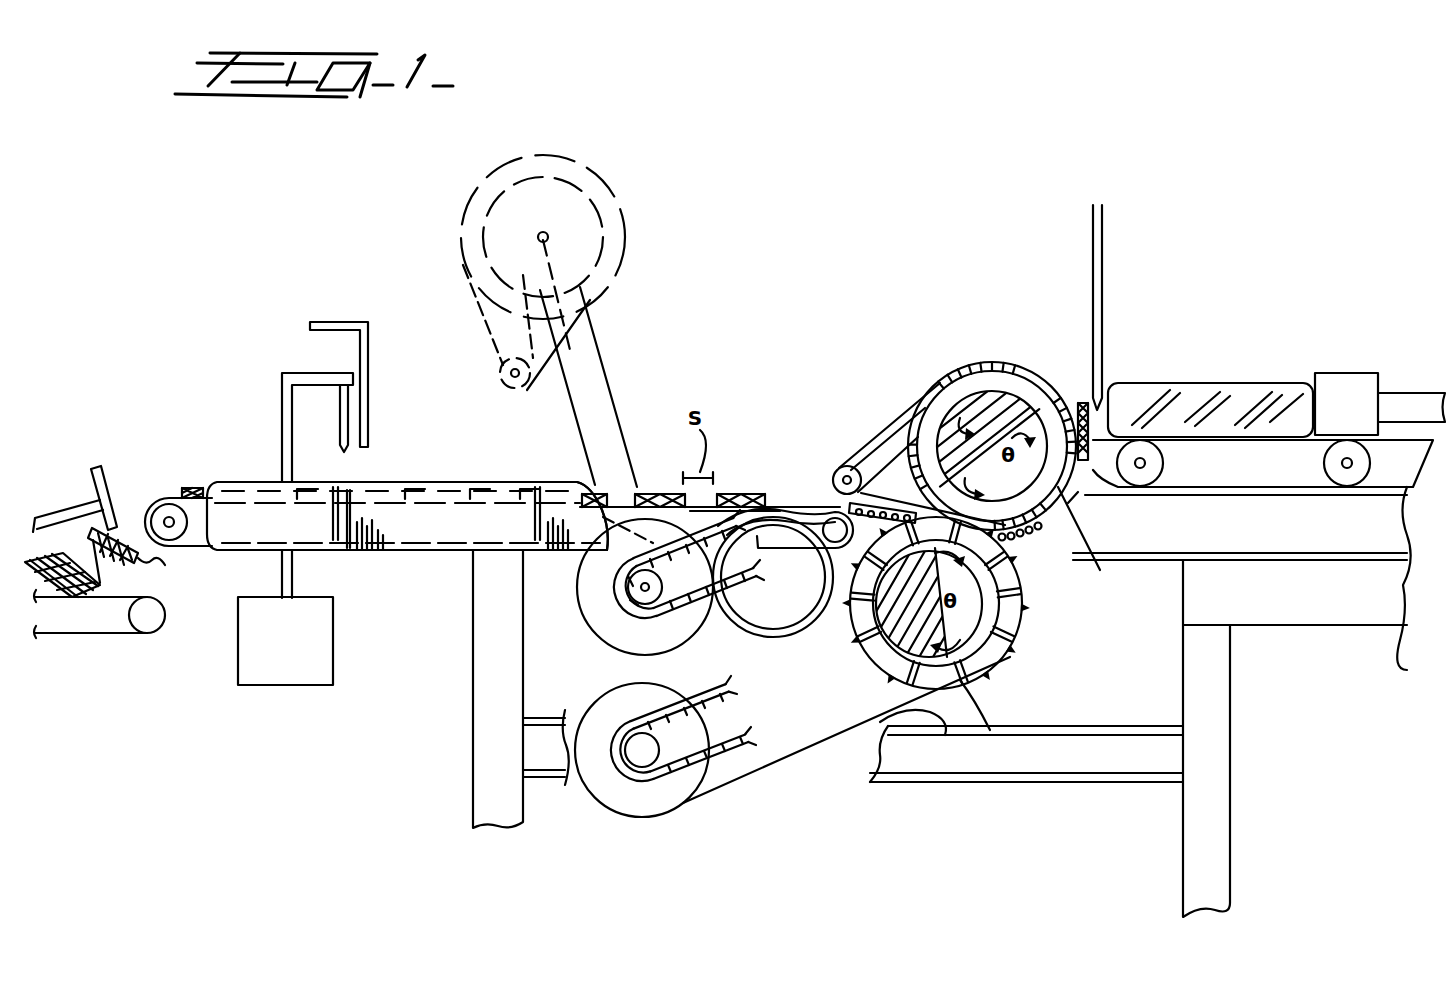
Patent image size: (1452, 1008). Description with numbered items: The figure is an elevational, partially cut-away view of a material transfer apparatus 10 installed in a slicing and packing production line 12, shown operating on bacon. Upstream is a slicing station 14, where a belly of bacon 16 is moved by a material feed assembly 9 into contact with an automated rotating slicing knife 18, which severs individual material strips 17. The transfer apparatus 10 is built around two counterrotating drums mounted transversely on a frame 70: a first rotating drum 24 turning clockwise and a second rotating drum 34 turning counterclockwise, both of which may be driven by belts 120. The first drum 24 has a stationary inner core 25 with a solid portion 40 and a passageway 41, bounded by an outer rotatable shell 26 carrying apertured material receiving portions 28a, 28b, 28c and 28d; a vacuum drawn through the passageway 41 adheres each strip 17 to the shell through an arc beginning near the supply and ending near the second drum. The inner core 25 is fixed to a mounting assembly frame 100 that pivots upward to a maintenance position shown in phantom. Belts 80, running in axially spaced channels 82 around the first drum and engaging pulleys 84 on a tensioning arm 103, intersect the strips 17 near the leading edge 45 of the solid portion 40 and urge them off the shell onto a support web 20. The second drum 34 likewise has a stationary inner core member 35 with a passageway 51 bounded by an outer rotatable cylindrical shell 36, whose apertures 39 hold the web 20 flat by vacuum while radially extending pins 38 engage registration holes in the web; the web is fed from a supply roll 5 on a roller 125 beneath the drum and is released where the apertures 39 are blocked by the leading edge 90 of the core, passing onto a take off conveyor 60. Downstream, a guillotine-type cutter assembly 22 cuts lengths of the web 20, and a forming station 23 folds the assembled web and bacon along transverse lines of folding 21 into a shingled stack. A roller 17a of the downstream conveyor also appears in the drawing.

The supply roll 5 is at (625, 800).
The material feed assembly 9 is at (1414, 400).
The material transfer apparatus 10 is at (957, 268).
The slicing and packing production line 12 is at (448, 472).
The slicing station 14 is at (1222, 365).
The belly of bacon 16 is at (1260, 400).
The material strip 17 is at (190, 486).
The conveyor roller 17a is at (1148, 460).
The slicing knife 18 is at (1102, 282).
The support web 20 is at (800, 505).
The transverse lines of folding 21 is at (90, 538).
The guillotine-type cutter assembly 22 is at (320, 315).
The forming station 23 is at (120, 472).
The first rotating drum 24 is at (1018, 380).
The stationary inner core 25 is at (957, 370).
The outer rotatable shell 26 is at (905, 378).
The material receiving portion 28a is at (1092, 420).
The material receiving portion 28b is at (1015, 540).
The material receiving portion 28c is at (905, 450).
The material receiving portion 28d is at (972, 365).
The second rotating drum 34 is at (980, 672).
The stationary inner core member 35 is at (858, 640).
The outer rotatable cylindrical shell 36 is at (885, 655).
The radially extending lugs or pins 38 is at (905, 680).
The apertures 39 is at (1005, 658).
The solid portion 40 is at (950, 395).
The passageway 41 is at (1087, 539).
The leading edge 45 is at (850, 504).
The passageway 51 is at (990, 610).
The take off conveyor 60 is at (607, 508).
The frame 70 is at (510, 528).
The belts 80 is at (838, 448).
The channels 82 is at (1080, 503).
The pulleys 84 is at (840, 472).
The leading edge 90 is at (995, 732).
The mounting assembly frame 100 is at (604, 386).
The arm 103 is at (870, 395).
The belts 120 is at (640, 625).
The roller 125 is at (630, 762).